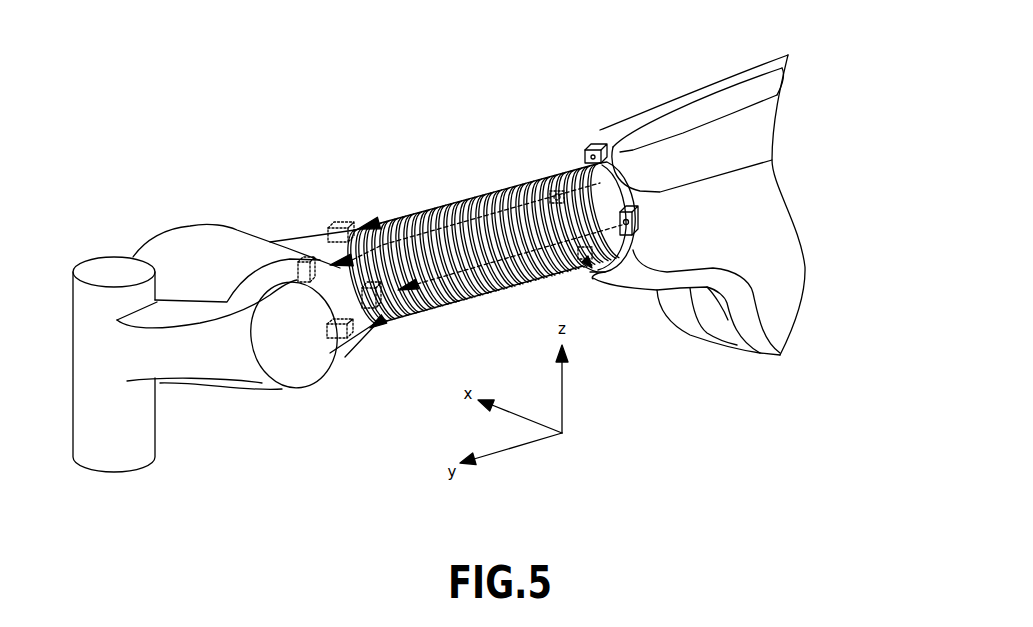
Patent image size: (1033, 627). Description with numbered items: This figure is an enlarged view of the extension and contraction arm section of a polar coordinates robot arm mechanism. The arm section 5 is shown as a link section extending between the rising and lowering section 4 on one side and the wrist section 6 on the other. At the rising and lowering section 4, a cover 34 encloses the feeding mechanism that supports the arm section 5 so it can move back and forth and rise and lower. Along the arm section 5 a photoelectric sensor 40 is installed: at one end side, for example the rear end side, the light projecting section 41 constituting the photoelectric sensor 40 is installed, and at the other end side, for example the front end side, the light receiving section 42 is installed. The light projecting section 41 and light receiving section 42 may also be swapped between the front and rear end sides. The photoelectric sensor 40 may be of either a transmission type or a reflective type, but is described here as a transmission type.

The rising and lowering section 4 is at (736, 58).
The arm section 5 is at (487, 302).
The wrist section 6 is at (243, 197).
The cover 34 is at (633, 115).
The photoelectric sensor 40 is at (343, 146).
The light projecting section 41 is at (585, 152).
The light receiving section 42 is at (345, 222).